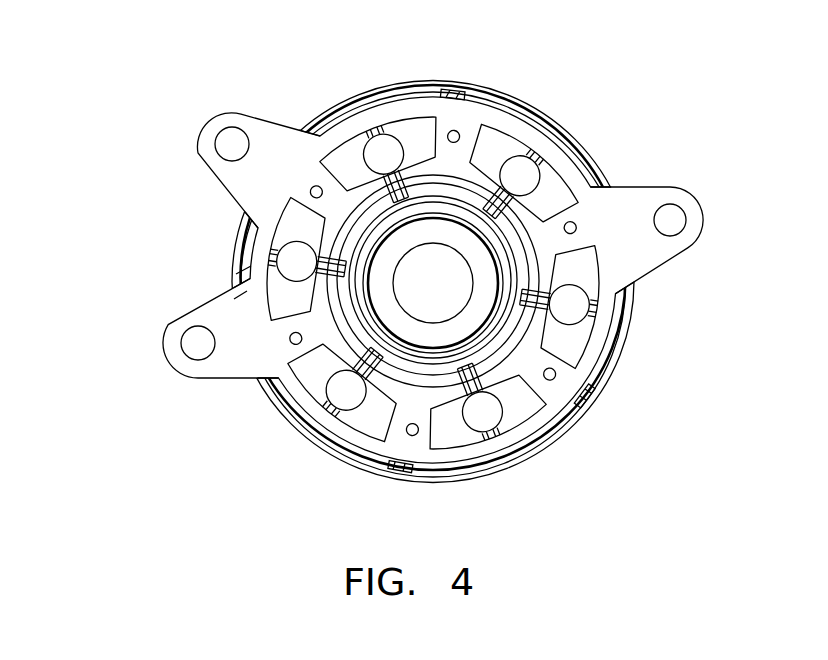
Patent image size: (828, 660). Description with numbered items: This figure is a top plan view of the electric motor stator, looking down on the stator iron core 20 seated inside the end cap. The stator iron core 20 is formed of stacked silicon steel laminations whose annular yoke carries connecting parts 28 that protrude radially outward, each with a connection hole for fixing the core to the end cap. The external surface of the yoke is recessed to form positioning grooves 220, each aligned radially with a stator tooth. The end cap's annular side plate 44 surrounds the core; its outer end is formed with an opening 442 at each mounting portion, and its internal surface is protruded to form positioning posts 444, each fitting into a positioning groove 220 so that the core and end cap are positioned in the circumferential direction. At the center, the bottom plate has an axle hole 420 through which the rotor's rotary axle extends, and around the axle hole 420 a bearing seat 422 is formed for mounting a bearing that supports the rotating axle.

The stator iron core 20 is at (340, 435).
The connecting part 28 is at (243, 175).
The side plate 44 is at (300, 427).
The opening 442 is at (243, 217).
The positioning post 444 is at (583, 400).
The positioning groove 220 is at (592, 397).
The axle hole 420 is at (475, 258).
The bearing seat 422 is at (437, 276).